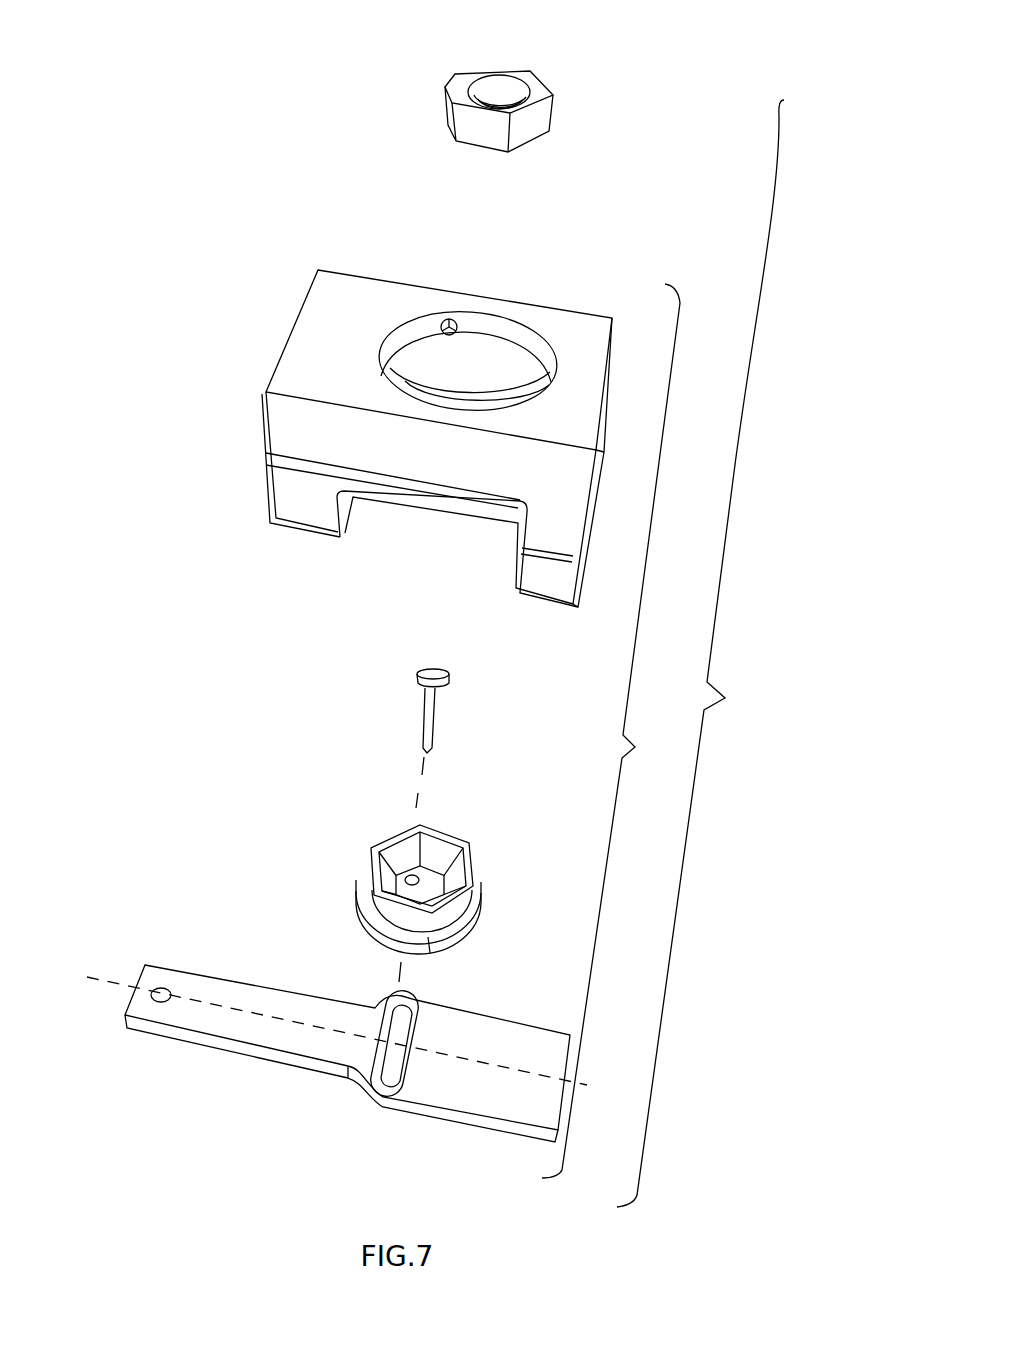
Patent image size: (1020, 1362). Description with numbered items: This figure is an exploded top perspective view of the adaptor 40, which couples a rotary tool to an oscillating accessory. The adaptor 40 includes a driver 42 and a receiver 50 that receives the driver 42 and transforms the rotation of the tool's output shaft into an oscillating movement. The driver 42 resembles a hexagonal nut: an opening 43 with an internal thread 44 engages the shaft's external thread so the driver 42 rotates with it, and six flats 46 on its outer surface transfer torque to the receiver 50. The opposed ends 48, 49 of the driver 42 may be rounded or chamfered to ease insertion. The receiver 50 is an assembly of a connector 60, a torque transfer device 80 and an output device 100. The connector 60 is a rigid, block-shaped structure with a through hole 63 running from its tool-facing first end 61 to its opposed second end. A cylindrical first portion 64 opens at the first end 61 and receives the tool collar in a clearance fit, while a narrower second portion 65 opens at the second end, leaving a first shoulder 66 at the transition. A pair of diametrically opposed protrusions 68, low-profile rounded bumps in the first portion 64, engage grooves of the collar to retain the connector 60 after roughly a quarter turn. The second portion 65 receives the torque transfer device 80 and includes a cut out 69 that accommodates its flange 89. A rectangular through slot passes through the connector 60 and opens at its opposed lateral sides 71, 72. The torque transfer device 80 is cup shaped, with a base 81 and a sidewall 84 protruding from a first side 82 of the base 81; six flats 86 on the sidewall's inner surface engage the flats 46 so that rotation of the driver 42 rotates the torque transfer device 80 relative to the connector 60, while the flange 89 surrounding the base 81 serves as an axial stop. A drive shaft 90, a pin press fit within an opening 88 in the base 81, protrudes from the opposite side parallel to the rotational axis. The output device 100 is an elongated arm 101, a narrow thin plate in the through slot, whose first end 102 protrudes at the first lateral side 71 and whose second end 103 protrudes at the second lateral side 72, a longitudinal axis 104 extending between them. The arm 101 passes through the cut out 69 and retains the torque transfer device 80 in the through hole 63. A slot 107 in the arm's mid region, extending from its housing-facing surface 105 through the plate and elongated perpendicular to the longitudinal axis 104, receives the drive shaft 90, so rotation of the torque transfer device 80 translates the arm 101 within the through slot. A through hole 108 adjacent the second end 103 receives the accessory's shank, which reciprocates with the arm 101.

The adaptor 40 is at (700, 653).
The driver 42 is at (547, 125).
The opening 43 is at (487, 71).
The internal thread 44 is at (513, 82).
The flat 46 is at (447, 117).
The end of the driver 48 is at (462, 71).
The end of the driver 49 is at (518, 160).
The receiver 50 is at (611, 731).
The connector 60 is at (333, 287).
The first end of the connector 61 is at (573, 327).
The through hole 63 is at (437, 425).
The first portion of the through hole 64 is at (497, 345).
The second portion of the through hole 65 is at (490, 400).
The first shoulder 66 is at (416, 377).
The protrusion 68 is at (449, 320).
The cut out 69 is at (353, 507).
The first lateral side of the connector 71 is at (590, 457).
The second lateral side of the connector 72 is at (263, 427).
The torque transfer device 80 is at (452, 833).
The base 81 is at (447, 868).
The first side of the base 82 is at (470, 863).
The sidewall 84 is at (457, 908).
The flat 86 is at (380, 843).
The opening 88 is at (400, 833).
The flange 89 is at (357, 910).
The drive shaft 90 is at (440, 703).
The output device 100 is at (260, 1000).
The arm 101 is at (463, 1020).
The first end of the arm 102 is at (560, 1133).
The second end of the arm 103 is at (123, 1020).
The longitudinal axis of the arm 104 is at (315, 1027).
The housing-facing surface of the arm 105 is at (520, 1037).
The slot 107 is at (373, 1093).
The through hole 108 is at (160, 987).